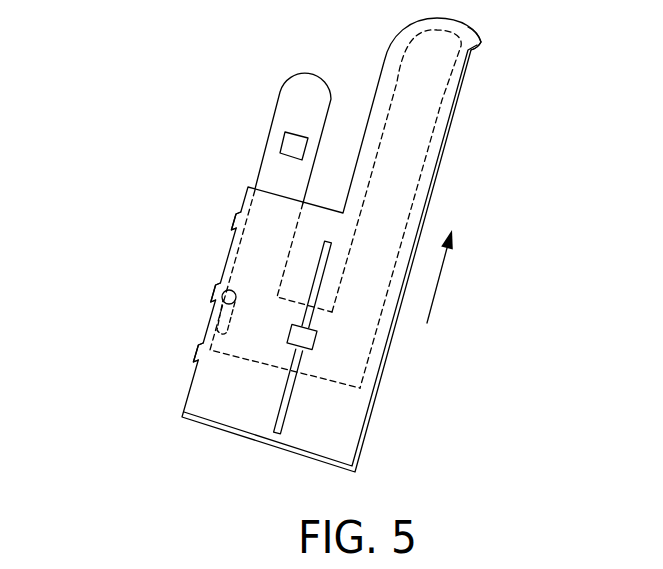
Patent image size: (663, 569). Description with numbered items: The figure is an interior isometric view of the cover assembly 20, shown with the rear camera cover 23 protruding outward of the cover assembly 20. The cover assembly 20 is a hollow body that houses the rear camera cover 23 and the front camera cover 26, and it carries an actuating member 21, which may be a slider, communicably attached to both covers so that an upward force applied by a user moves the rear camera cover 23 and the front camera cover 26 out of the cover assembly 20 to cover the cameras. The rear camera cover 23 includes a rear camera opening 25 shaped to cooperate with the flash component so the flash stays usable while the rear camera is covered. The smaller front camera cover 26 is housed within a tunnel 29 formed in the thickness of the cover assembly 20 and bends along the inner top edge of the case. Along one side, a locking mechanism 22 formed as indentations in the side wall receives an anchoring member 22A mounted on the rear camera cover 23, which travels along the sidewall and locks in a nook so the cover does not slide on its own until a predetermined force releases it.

The cover assembly 20 is at (186, 396).
The actuating member 21 is at (303, 342).
The locking mechanism 22 is at (232, 232).
The anchoring member 22A is at (223, 302).
The rear camera cover 23 is at (312, 100).
The rear camera opening 25 is at (292, 147).
The front camera cover 26 is at (432, 73).
The tunnel 29 is at (467, 46).